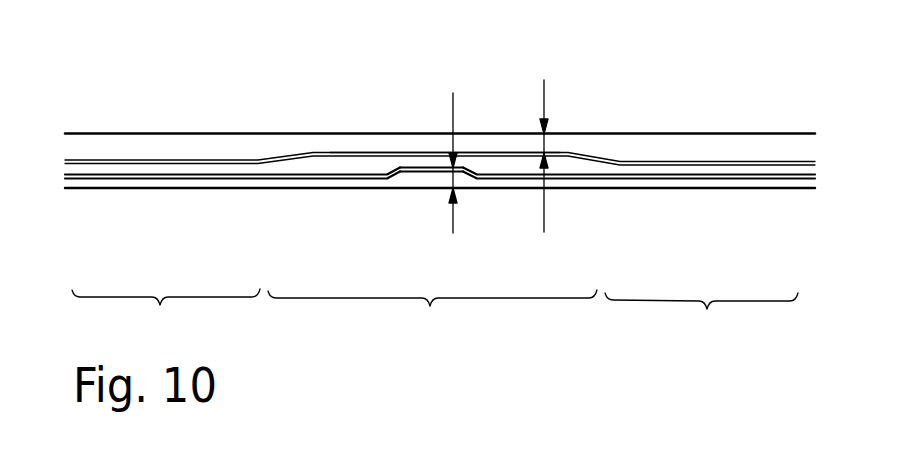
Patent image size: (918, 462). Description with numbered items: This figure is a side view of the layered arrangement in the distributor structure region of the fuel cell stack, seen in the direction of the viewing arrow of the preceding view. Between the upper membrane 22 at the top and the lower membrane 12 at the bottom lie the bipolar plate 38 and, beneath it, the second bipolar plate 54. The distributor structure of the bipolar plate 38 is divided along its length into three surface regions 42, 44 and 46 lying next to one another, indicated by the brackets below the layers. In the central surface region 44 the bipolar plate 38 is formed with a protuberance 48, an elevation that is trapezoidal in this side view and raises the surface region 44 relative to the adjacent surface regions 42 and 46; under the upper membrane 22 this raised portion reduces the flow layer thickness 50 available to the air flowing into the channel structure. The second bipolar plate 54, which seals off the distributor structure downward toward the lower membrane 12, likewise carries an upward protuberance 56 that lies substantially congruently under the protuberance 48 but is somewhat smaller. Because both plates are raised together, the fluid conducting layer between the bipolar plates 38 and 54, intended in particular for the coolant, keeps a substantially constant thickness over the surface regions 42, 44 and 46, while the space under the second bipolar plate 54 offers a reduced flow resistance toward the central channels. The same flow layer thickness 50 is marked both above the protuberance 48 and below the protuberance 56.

The lower membrane 12 is at (347, 189).
The upper membrane 22 is at (352, 133).
The bipolar plate 38 is at (200, 162).
The surface region 42 is at (166, 322).
The central surface region 44 is at (432, 324).
The surface region 46 is at (701, 324).
The protuberance 48 is at (483, 152).
The flow layer thickness 50 is at (548, 99).
The second bipolar plate 54 is at (255, 176).
The protuberance 56 is at (427, 173).